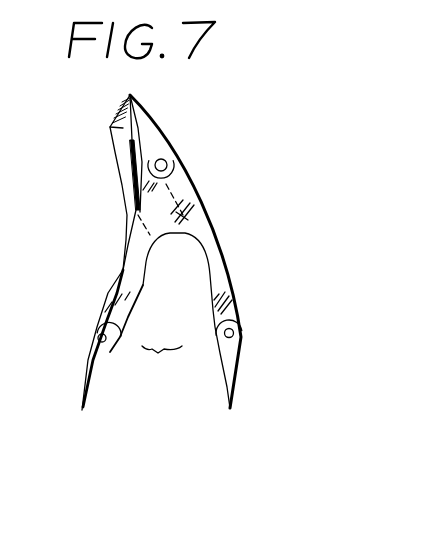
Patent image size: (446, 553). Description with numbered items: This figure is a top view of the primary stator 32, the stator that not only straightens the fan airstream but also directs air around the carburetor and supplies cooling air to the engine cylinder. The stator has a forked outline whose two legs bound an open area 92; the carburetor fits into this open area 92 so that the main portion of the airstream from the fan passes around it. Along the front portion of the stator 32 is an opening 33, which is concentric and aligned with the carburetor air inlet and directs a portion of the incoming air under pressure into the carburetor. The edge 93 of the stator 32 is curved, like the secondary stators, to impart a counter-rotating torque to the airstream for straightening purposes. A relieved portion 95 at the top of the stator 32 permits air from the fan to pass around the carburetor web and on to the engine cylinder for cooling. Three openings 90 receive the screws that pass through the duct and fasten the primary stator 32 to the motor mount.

The primary stator 32 is at (231, 188).
The opening 33 is at (132, 183).
The openings 90 is at (166, 158).
The open area 92 is at (158, 354).
The edge 93 is at (129, 95).
The relieved portion 95 is at (123, 274).